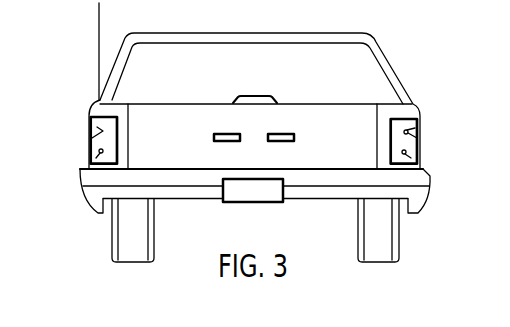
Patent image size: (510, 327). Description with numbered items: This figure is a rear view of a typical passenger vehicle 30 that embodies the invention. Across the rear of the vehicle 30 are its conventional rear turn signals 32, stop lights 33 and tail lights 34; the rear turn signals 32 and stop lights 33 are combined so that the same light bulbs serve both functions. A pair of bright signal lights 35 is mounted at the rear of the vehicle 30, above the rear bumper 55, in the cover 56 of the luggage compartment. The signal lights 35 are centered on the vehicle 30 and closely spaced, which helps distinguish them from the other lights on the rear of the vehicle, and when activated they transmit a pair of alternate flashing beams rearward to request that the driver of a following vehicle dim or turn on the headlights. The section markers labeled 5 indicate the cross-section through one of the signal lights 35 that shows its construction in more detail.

The section line 5- 5 is at (303, 75).
The passenger vehicle 30 is at (279, 33).
The rear turn signals 32 is at (90, 128).
The stop lights 33 is at (91, 142).
The tail lights 34 is at (90, 170).
The bright signal lights 35 is at (225, 133).
The rear bumper 55 is at (293, 179).
The cover of the luggage compartment 56 is at (170, 152).